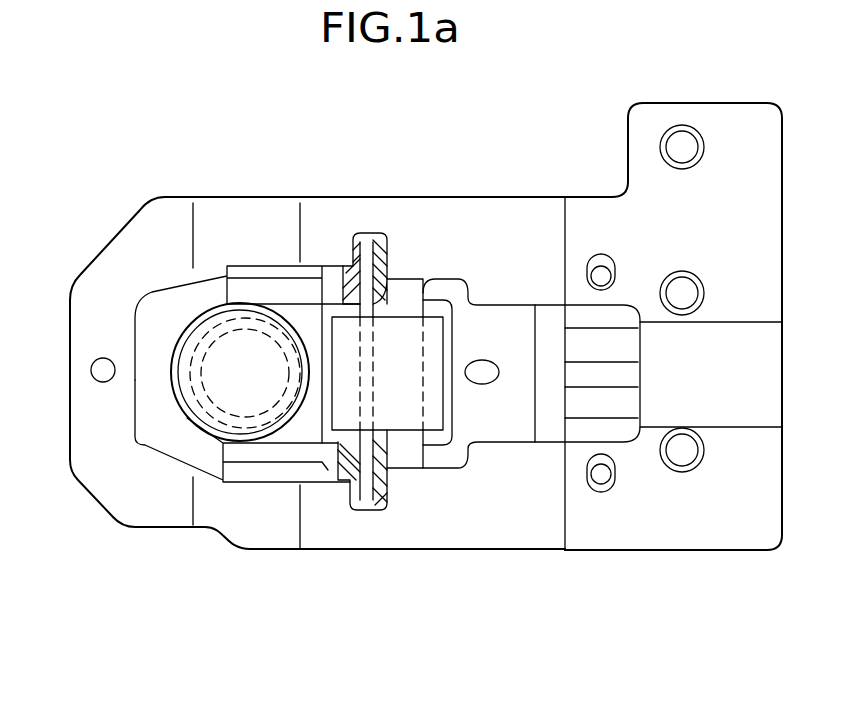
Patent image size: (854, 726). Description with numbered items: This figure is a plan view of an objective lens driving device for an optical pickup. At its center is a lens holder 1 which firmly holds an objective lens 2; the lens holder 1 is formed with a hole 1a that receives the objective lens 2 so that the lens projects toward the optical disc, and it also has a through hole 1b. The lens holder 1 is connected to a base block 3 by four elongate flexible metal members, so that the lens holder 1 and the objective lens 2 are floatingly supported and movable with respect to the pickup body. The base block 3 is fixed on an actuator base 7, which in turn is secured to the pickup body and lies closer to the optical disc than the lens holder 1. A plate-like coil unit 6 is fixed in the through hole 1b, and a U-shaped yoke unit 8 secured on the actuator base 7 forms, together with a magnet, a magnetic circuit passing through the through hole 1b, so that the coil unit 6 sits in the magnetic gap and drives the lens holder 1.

The lens holder 1 is at (310, 310).
The hole 1a is at (180, 291).
The through hole 1b is at (330, 445).
The objective lens 2 is at (132, 446).
The base block 3 is at (620, 413).
The coil unit 6 is at (367, 245).
The actuator base 7 is at (727, 527).
The yoke unit 8 is at (410, 425).